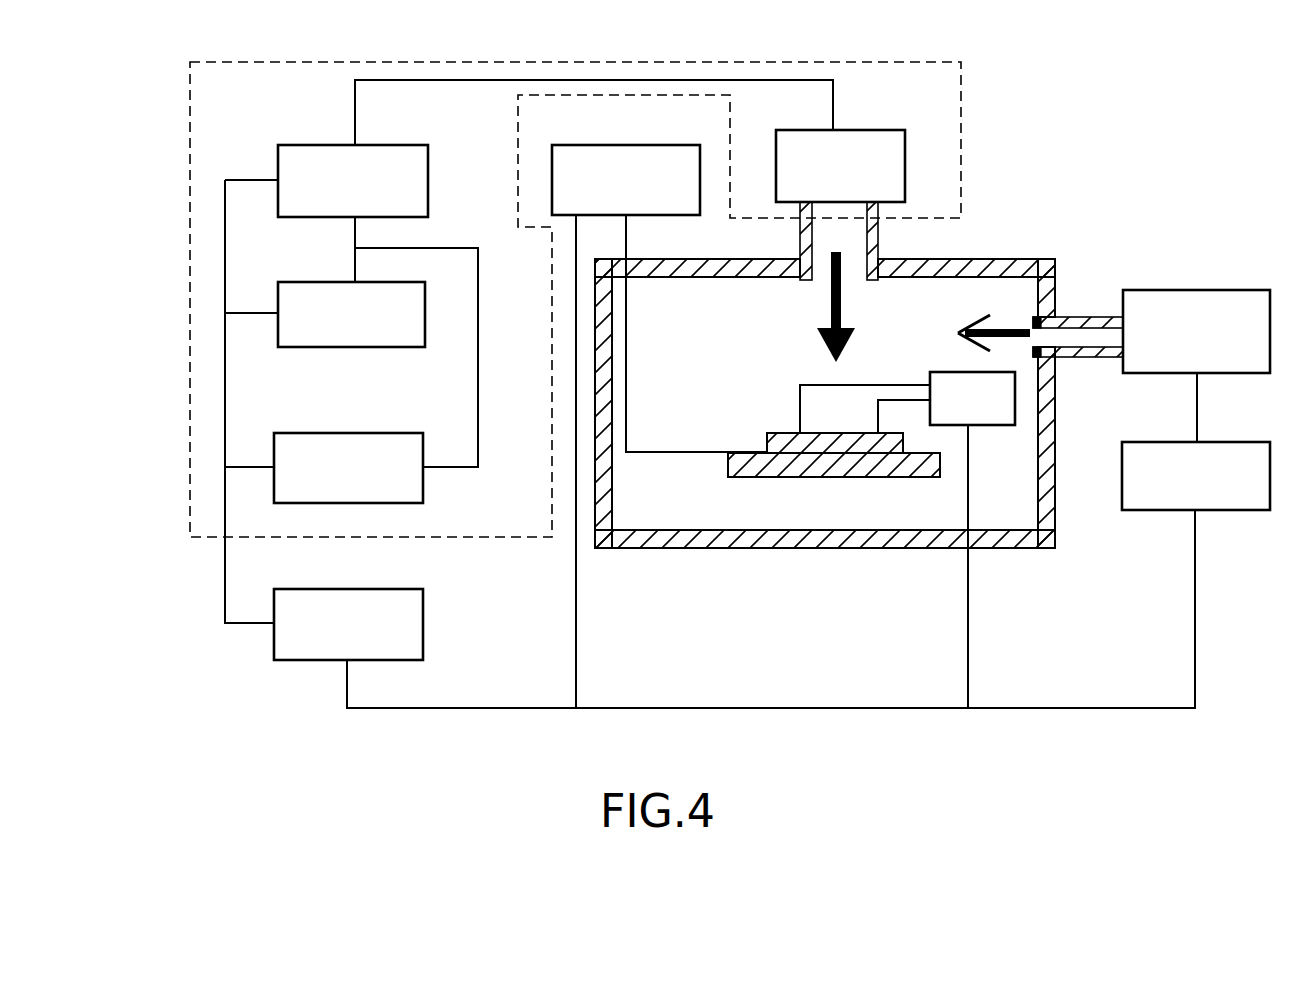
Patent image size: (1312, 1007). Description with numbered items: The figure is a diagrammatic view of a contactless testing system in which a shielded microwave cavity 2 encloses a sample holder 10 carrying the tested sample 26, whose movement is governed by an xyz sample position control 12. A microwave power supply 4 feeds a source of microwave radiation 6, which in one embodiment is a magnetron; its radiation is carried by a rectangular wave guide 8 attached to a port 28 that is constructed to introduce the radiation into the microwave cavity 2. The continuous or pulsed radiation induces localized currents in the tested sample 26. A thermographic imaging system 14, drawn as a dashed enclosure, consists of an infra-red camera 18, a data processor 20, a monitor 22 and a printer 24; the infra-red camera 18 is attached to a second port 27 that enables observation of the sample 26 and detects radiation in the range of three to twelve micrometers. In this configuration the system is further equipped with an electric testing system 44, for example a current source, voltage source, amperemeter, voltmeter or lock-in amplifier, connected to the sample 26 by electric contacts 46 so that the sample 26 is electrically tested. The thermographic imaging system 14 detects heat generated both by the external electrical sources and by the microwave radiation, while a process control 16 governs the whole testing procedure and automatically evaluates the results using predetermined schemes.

The shielded microwave cavity 2 is at (790, 548).
The microwave power supply 4 is at (1213, 510).
The source of microwave radiation 6 is at (1180, 290).
The wave guide 8 is at (1063, 317).
The sample holder 10 is at (770, 477).
The xyz sample position control 12 is at (615, 145).
The thermographic imaging system 14 is at (190, 110).
The process control 16 is at (393, 589).
The infra-red camera 18 is at (870, 130).
The data processor 20 is at (333, 145).
The monitor 22 is at (392, 282).
The printer 24 is at (393, 433).
The sample 26 is at (780, 433).
The port 27 is at (880, 236).
The port 28 is at (1060, 345).
The electric testing system 44 is at (970, 372).
The electric contacts 46 is at (878, 424).